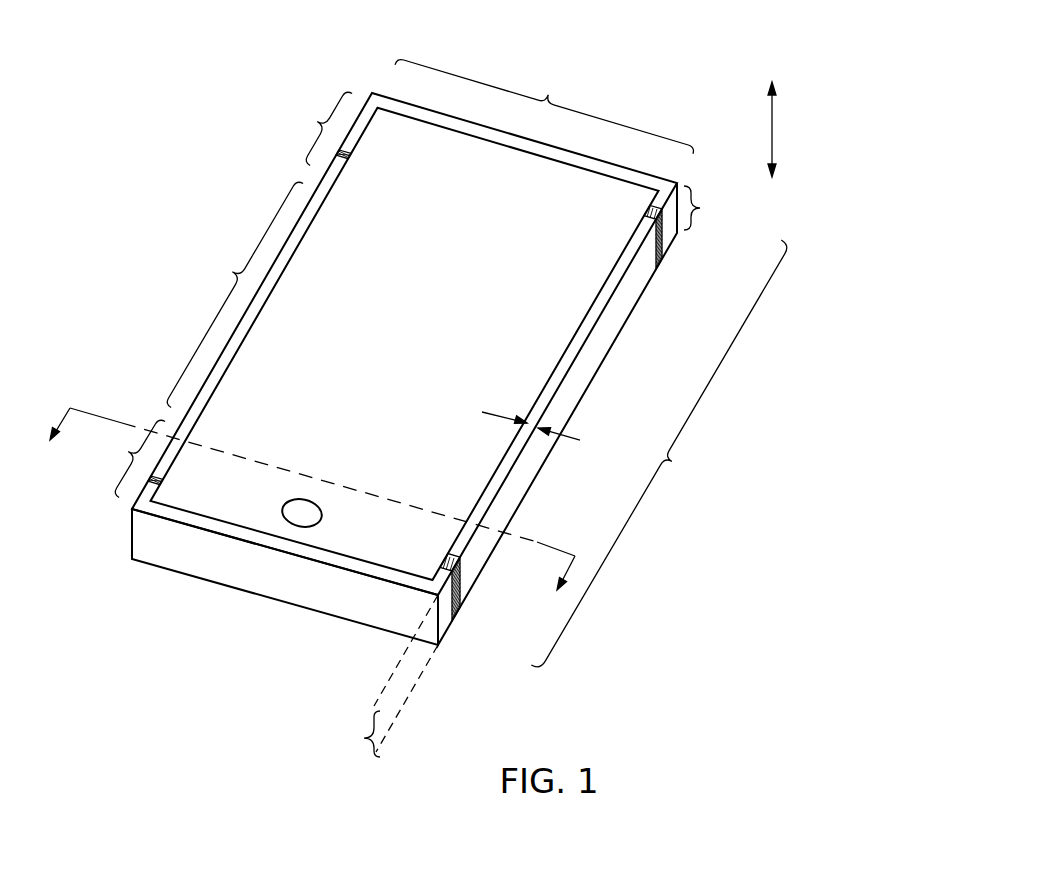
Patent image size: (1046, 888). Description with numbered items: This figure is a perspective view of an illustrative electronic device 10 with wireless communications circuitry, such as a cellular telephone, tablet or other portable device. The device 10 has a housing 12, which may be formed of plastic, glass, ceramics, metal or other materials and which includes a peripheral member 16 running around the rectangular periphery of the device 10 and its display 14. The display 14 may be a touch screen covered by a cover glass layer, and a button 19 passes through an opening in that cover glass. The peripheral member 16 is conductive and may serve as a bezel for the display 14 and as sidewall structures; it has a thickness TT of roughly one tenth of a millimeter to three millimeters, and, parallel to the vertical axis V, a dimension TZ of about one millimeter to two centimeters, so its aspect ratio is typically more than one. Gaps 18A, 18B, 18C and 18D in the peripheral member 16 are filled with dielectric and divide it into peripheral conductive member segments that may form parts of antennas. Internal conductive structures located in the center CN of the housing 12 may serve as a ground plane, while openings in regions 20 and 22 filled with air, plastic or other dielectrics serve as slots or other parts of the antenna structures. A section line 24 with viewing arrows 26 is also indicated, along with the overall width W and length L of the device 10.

The electronic device 10 is at (436, 336).
The housing 12 is at (431, 414).
The display 14 is at (585, 190).
The peripheral member 16 is at (632, 280).
The gap 18A is at (460, 597).
The gap 18B is at (162, 481).
The gap 18C is at (350, 154).
The gap 18D is at (665, 245).
The button 19 is at (306, 527).
The region 20 is at (130, 458).
The region 22 is at (320, 128).
The section line 24 is at (90, 410).
The viewing direction arrows 26 is at (62, 418).
The width W is at (544, 107).
The length L is at (658, 453).
The vertical axis V is at (772, 115).
The thickness TT is at (538, 410).
The center CN is at (235, 294).
The dimension TZ is at (383, 676).